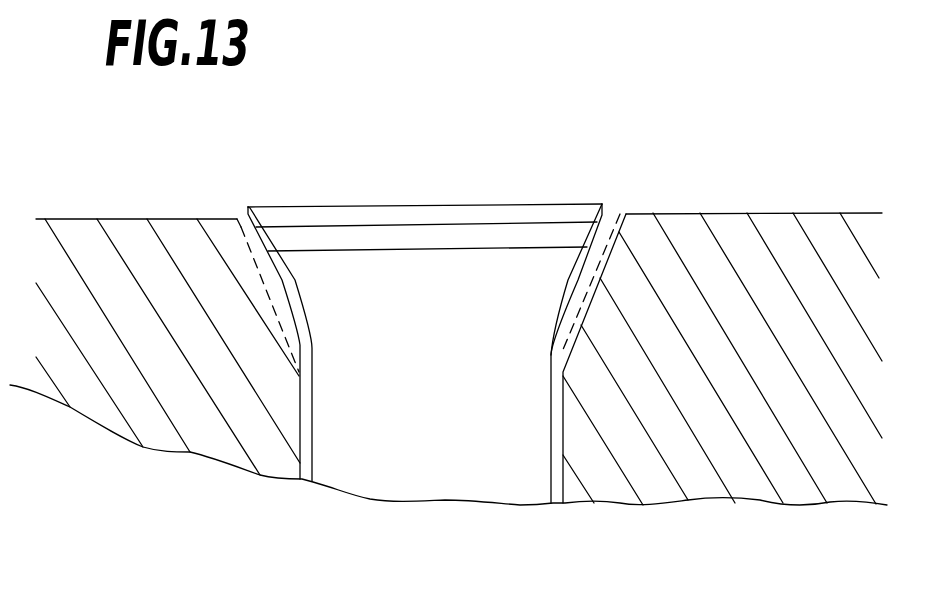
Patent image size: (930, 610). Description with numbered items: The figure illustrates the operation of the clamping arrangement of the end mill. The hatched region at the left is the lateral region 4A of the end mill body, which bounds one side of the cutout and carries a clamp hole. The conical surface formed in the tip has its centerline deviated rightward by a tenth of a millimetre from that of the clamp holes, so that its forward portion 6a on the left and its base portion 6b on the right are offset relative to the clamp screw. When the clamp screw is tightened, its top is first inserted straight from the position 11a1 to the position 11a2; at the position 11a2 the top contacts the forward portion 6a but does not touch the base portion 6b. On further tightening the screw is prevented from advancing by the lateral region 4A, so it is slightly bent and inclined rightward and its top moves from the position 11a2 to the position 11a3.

The lateral region 4A is at (88, 247).
The position of the top of the clamp screw 11a1 is at (338, 205).
The position of the top of the clamp screw 11a2 is at (417, 226).
The position of the top of the clamp screw 11a3 is at (473, 249).
The forward portion of the conical surface 6a is at (283, 305).
The base portion of the conical surface 6b is at (590, 312).